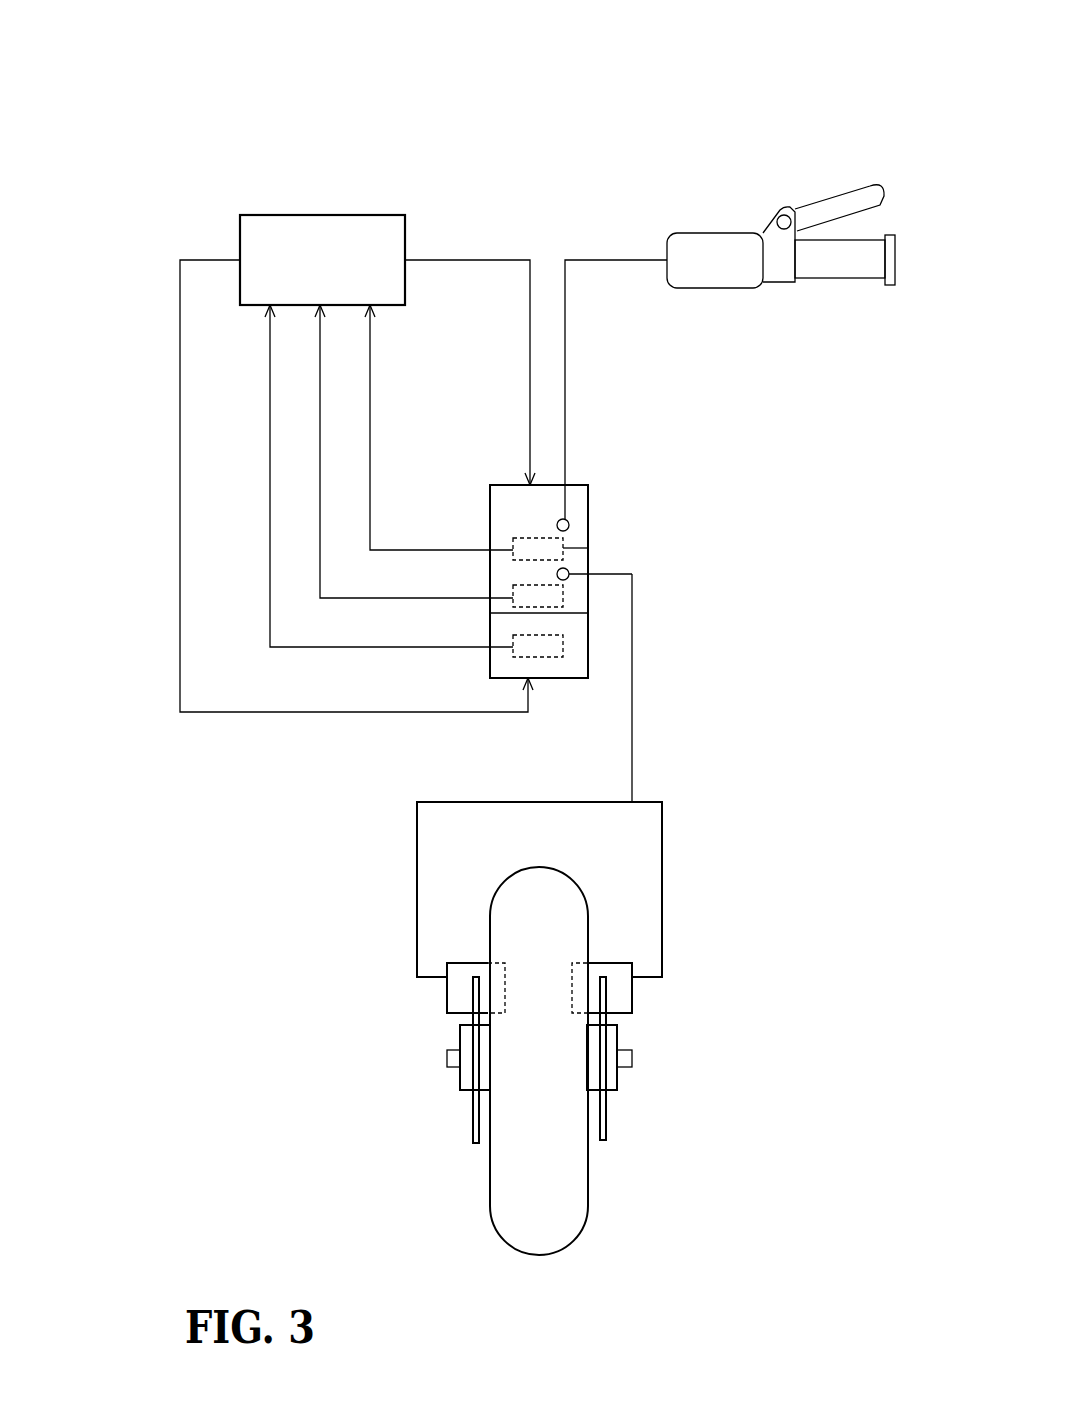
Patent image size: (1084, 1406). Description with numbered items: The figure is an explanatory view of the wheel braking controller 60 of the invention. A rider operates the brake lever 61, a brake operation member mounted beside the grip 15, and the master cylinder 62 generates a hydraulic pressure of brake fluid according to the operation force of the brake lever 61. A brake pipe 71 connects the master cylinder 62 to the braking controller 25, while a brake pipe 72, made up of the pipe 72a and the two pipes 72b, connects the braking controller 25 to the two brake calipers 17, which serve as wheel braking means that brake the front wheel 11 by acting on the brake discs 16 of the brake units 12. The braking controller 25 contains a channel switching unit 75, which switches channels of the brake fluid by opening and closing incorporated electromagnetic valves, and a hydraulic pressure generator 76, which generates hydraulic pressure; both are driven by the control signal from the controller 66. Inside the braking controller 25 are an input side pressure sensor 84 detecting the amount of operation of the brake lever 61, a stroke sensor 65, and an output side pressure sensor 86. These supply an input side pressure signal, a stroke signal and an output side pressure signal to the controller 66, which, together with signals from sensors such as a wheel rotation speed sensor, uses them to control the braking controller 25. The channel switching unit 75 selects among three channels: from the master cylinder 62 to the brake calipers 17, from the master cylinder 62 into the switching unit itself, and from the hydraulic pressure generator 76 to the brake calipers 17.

The wheel braking controller 60 is at (471, 87).
The brake lever 61 is at (838, 215).
The master cylinder 62 is at (700, 278).
The handlebar grip 15 is at (815, 280).
The controller 66 is at (266, 212).
The brake pipe 71 is at (567, 367).
The channel switching unit 75 is at (503, 495).
The braking controller 25 is at (614, 519).
The output side pressure sensor 86 is at (588, 548).
The input side pressure sensor 84 is at (563, 596).
The brake pipe 72 is at (657, 667).
The pipe 72a is at (632, 730).
The hydraulic pressure generator 76 is at (497, 660).
The stroke sensor 65 is at (553, 658).
The pipe 72b is at (417, 848).
The brake caliper 17 is at (447, 1000).
The brake caliper 12 is at (385, 1066).
The brake disc 16 is at (472, 1115).
The front wheel 11 is at (538, 1243).